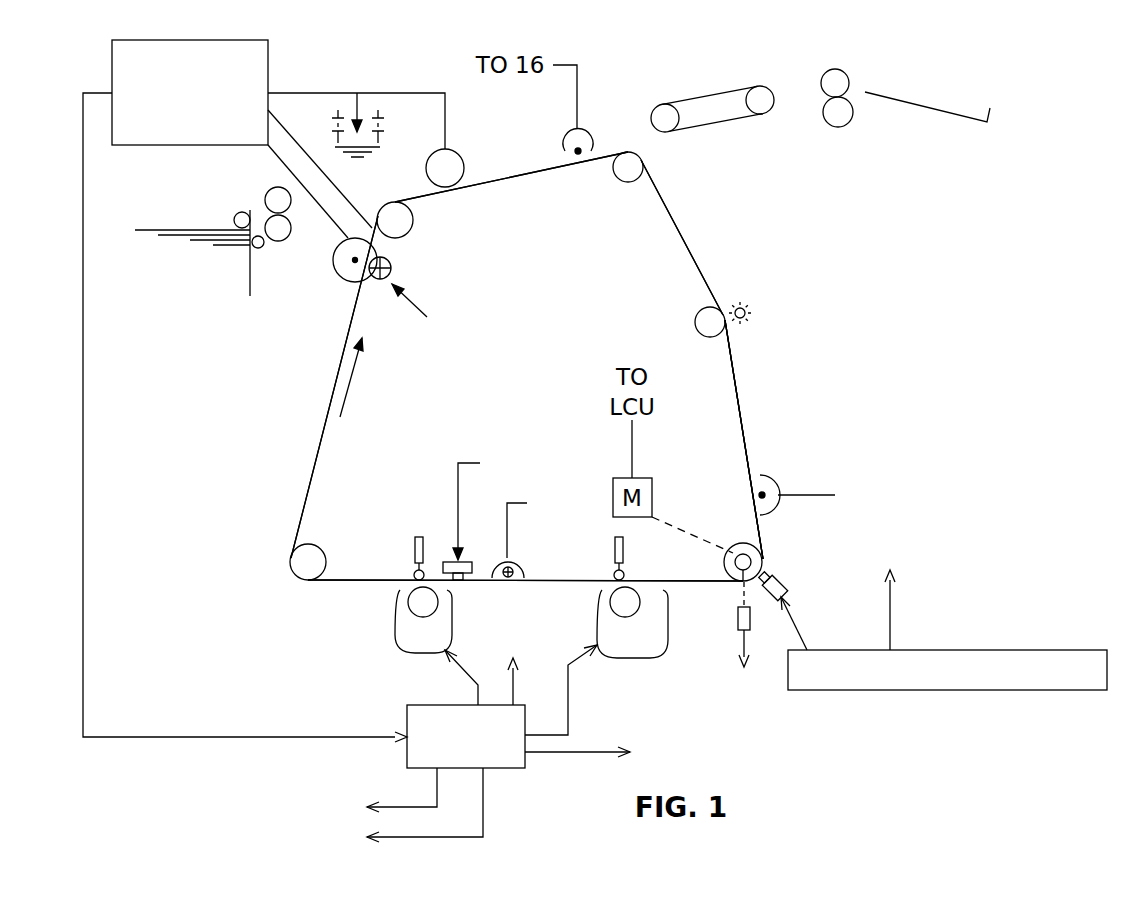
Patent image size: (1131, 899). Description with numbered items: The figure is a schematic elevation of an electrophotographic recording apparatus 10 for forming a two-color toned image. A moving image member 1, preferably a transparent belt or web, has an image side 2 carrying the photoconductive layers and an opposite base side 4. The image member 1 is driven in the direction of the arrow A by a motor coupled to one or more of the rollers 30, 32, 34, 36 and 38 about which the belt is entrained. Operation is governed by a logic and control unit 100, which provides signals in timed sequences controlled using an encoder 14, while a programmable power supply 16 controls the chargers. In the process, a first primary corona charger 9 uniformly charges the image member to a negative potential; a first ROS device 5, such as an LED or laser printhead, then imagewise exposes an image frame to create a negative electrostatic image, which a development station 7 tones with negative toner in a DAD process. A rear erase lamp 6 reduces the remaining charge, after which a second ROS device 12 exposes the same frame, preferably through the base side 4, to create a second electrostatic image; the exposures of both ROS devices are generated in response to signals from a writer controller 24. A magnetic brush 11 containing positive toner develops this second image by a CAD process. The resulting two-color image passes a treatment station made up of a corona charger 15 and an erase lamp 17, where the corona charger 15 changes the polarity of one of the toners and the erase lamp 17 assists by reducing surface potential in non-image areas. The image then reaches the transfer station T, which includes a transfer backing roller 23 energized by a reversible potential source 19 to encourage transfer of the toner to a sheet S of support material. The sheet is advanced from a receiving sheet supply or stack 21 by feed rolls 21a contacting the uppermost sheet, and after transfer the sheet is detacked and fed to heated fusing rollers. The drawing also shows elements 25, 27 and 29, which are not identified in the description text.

The image member 1 is at (738, 378).
The image side 2 is at (748, 460).
The base side 4 is at (740, 420).
The first ROS device 5 is at (787, 590).
The rear erase lamp 6 is at (525, 563).
The development station 7 is at (655, 660).
The first primary corona charger 9 is at (790, 510).
The electrophotographic recording apparatus 10 is at (839, 305).
The magnetic brush 11 is at (395, 625).
The second ROS device 12 is at (447, 562).
The encoder 14 is at (738, 612).
The corona charger 15 is at (340, 275).
The programmable power supply 16 is at (507, 768).
The erase lamp 17 is at (392, 270).
The reversible potential source 19 is at (372, 91).
The receiving sheet supply or stack 21 is at (190, 240).
The feed rolls 21a is at (238, 213).
The transfer backing roller 23 is at (462, 165).
The writer controller 24 is at (870, 690).
The fuser rollers 25 is at (845, 70).
The output tray 27 is at (935, 110).
The erase lamp 29 is at (752, 312).
The roller 30 is at (734, 545).
The roller 32 is at (322, 548).
The roller 34 is at (413, 215).
The roller 36 is at (612, 170).
The roller 38 is at (694, 318).
The logic and control unit 100 is at (268, 62).
The sheet S is at (149, 230).
The transfer station T is at (386, 186).
The arrow A is at (345, 394).